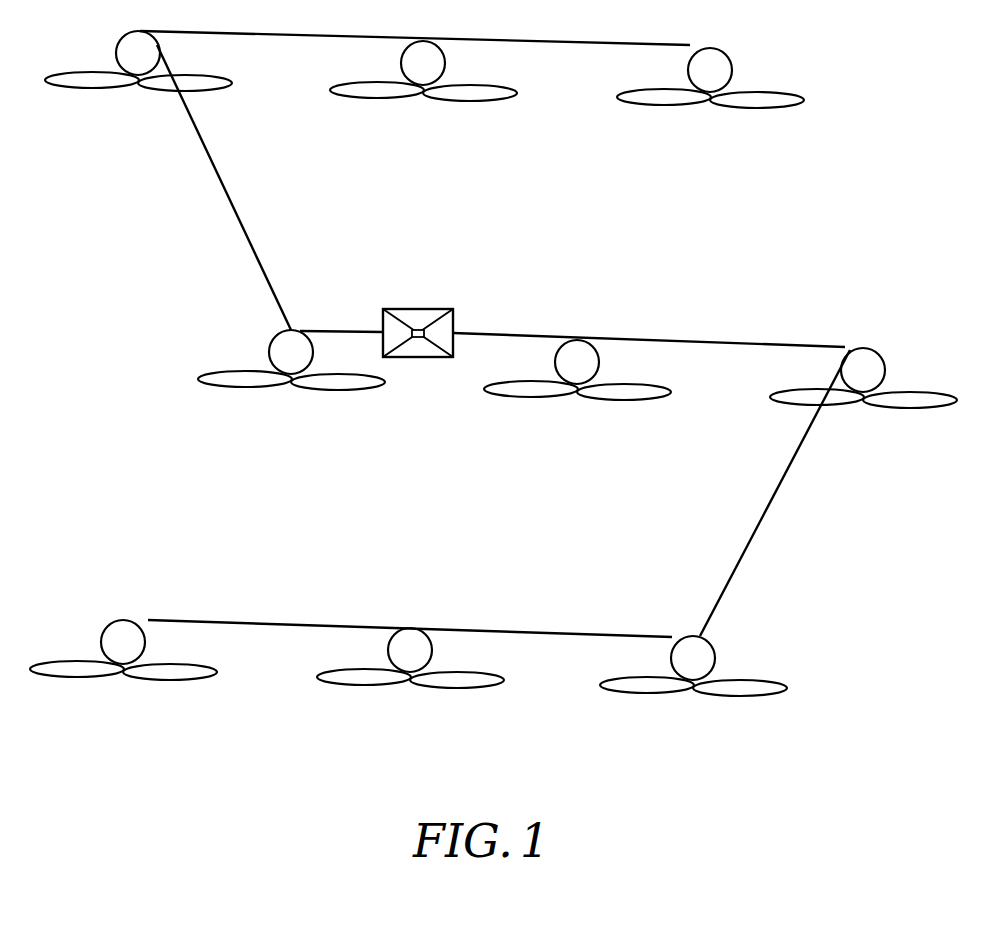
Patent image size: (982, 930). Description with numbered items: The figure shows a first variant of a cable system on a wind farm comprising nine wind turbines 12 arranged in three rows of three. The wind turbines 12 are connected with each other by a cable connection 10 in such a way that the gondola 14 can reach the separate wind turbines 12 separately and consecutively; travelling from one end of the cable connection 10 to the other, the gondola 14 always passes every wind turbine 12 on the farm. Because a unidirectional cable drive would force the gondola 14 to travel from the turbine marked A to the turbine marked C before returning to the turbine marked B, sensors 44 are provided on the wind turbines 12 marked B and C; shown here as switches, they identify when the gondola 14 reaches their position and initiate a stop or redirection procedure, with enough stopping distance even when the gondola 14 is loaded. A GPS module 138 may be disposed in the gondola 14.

The cable connection 10 is at (553, 628).
The wind turbine 12 is at (493, 363).
The gondola 14 is at (418, 318).
The sensor 44 is at (700, 45).
The GPS module 138 is at (420, 357).